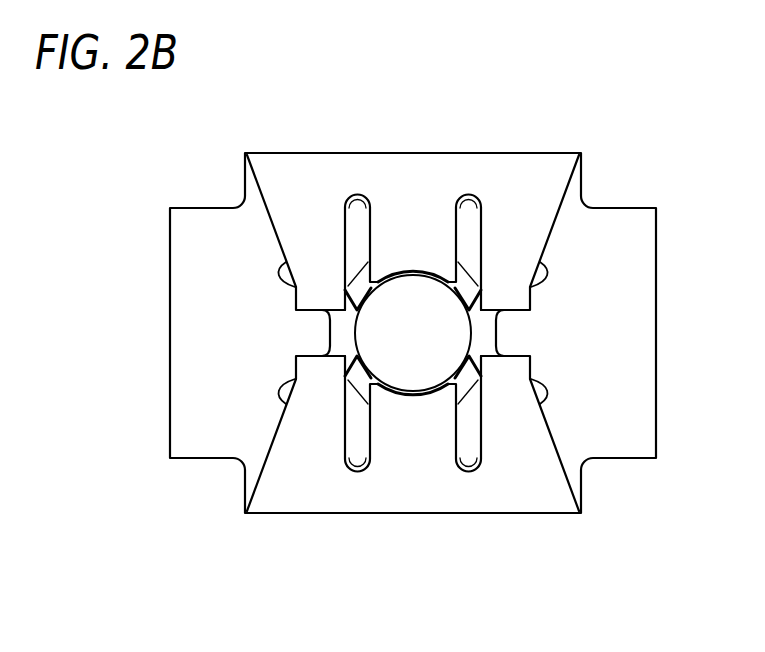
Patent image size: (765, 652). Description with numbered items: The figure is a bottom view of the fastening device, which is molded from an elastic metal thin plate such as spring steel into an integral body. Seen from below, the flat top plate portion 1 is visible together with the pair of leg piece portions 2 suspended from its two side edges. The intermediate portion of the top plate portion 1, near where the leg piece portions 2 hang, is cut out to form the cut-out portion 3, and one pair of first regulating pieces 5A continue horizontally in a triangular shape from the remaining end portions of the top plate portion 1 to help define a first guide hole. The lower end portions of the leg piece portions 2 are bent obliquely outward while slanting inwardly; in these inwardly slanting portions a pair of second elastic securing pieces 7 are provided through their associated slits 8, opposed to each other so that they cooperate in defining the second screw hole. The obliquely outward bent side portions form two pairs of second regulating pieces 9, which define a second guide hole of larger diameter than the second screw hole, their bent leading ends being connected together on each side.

The top plate portion 1 is at (181, 238).
The leg piece portions 2 is at (445, 123).
The cut-out portion 3 is at (390, 351).
The first regulating pieces 5A is at (321, 331).
The second elastic securing pieces 7 is at (407, 270).
The slits 8 is at (356, 196).
The second regulating pieces 9 is at (306, 289).